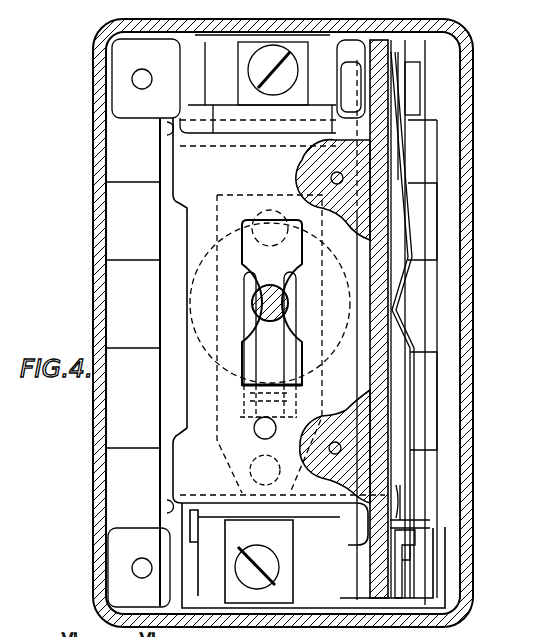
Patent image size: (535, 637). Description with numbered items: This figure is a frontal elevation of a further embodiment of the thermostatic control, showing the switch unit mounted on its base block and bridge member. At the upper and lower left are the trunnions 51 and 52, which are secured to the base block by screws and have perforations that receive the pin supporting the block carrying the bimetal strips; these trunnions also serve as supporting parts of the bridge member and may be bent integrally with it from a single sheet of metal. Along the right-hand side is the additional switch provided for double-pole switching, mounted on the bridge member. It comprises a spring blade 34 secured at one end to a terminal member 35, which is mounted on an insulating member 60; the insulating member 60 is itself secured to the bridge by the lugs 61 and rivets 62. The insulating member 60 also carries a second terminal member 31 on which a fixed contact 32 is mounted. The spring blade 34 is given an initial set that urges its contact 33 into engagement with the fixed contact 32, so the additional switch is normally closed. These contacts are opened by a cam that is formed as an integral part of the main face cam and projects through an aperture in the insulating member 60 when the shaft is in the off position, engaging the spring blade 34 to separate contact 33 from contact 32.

The trunnion 51 is at (180, 59).
The trunnion 52 is at (365, 47).
The insulating member 60 is at (365, 80).
The lug 61 is at (300, 163).
The rivet 62 is at (331, 178).
The terminal member 35 is at (395, 52).
The spring blade 34 is at (405, 175).
The contact 33 is at (405, 495).
The fixed contact 32 is at (400, 522).
The terminal member 31 is at (400, 545).